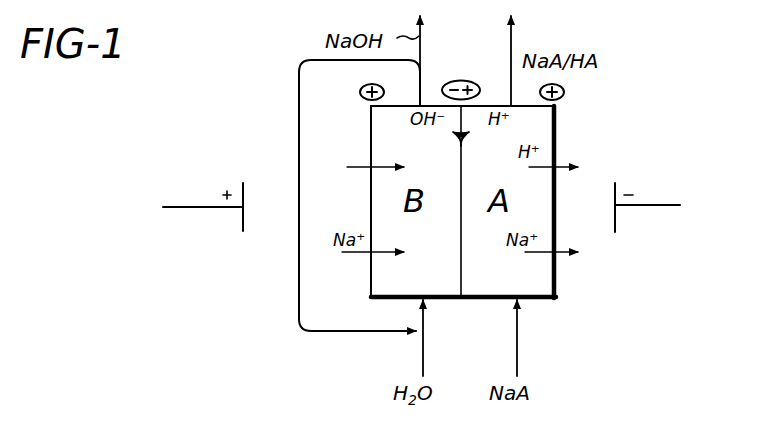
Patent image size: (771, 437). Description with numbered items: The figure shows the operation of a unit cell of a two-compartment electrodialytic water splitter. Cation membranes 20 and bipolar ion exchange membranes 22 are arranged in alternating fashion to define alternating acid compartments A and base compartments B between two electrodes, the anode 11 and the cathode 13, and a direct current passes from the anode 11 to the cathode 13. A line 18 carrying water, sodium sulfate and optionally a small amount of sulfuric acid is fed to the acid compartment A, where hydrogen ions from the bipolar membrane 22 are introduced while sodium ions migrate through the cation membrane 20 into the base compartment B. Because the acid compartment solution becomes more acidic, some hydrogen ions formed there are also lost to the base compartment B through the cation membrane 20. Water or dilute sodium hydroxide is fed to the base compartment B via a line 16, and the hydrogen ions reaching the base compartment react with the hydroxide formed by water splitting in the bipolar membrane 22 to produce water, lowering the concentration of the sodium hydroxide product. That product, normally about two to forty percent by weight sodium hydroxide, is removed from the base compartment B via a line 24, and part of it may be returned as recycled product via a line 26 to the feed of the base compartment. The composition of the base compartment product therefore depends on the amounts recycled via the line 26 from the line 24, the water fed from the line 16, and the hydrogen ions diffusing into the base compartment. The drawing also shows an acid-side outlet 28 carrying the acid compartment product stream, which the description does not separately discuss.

The anode 11 is at (239, 218).
The cathode 13 is at (616, 218).
The line 16 is at (424, 344).
The line 18 is at (518, 344).
The cation membranes 20 is at (373, 272).
The bipolar ion exchange membranes 22 is at (462, 270).
The line 24 is at (421, 42).
The line 26 is at (297, 100).
The NaA/HA product outlet 28 is at (511, 50).